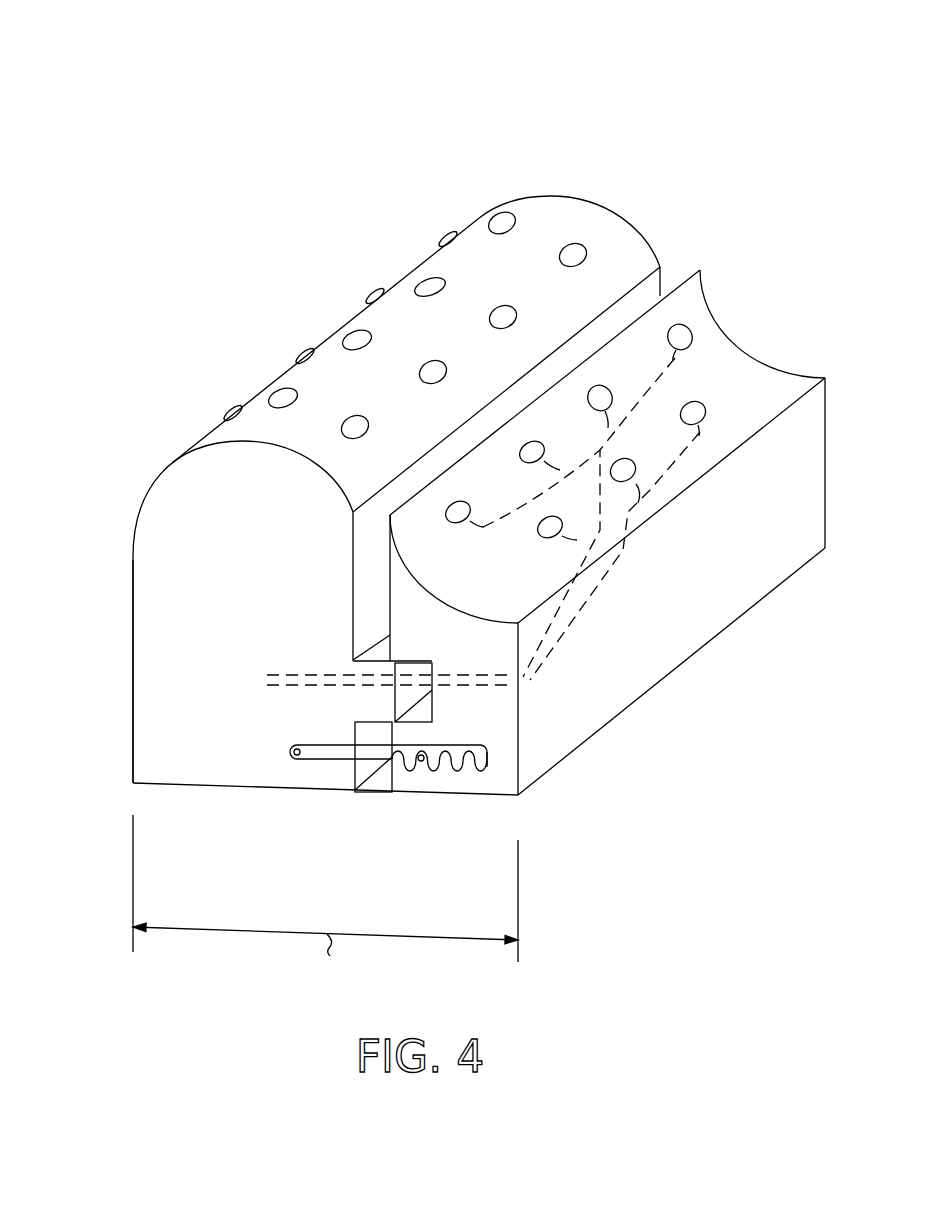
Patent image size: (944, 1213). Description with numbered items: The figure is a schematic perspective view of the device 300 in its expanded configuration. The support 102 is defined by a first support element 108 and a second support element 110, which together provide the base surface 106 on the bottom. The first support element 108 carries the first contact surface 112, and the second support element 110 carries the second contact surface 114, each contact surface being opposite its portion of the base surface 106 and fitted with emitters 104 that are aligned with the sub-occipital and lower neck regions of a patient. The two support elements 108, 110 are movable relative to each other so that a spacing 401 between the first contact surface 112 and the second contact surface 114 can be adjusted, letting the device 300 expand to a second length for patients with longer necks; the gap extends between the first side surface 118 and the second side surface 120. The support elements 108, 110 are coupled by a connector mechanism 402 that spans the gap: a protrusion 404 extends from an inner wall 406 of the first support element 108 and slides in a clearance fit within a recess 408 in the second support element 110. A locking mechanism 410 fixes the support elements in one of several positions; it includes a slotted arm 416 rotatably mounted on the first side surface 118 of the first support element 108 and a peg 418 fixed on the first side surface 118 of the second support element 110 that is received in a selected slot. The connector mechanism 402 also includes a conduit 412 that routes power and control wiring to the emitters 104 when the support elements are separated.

The device 300 is at (718, 113).
The support 102 is at (162, 445).
The emitters 104 is at (577, 253).
The base surface 106 is at (197, 790).
The first support element 108 is at (118, 577).
The second support element 110 is at (505, 803).
The first contact surface 112 is at (578, 198).
The second contact surface 114 is at (768, 381).
The first side surface 118 is at (153, 716).
The second side surface 120 is at (525, 196).
The spacing 401 is at (700, 255).
The connector mechanism 402 is at (457, 702).
The protrusion 404 is at (365, 708).
The inner wall 406 is at (360, 773).
The recess 408 is at (430, 718).
The locking mechanism 410 is at (448, 777).
The conduit 412 is at (545, 659).
The slotted arm 416 is at (490, 762).
The peg 418 is at (421, 762).